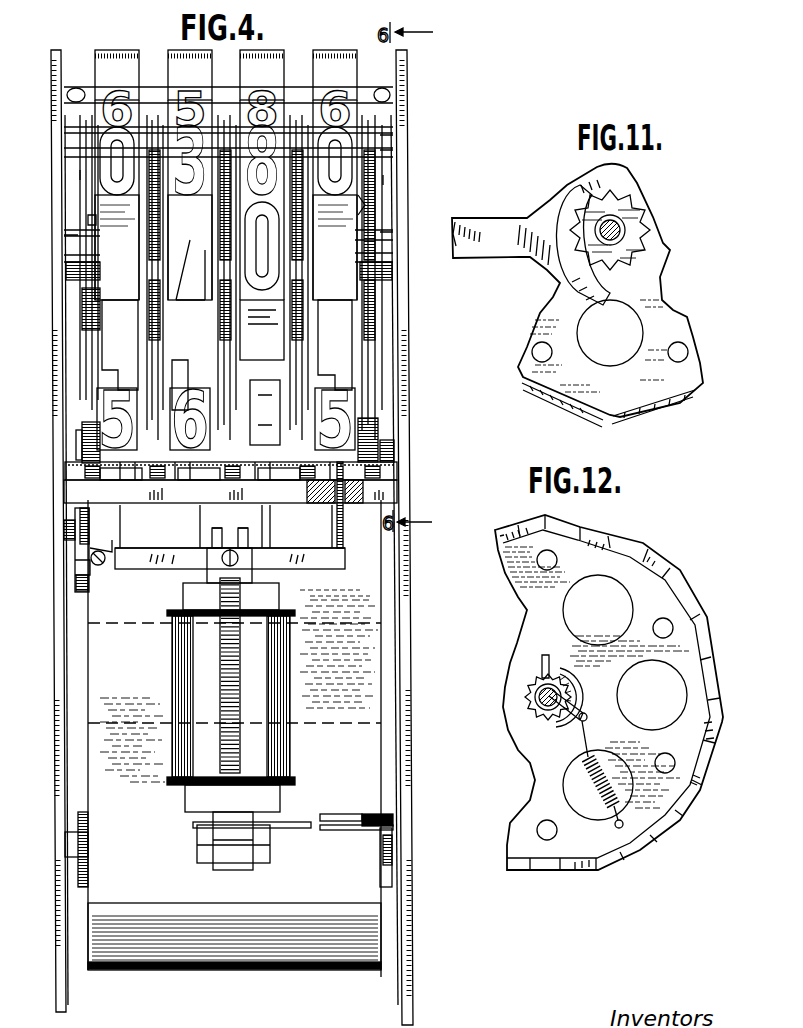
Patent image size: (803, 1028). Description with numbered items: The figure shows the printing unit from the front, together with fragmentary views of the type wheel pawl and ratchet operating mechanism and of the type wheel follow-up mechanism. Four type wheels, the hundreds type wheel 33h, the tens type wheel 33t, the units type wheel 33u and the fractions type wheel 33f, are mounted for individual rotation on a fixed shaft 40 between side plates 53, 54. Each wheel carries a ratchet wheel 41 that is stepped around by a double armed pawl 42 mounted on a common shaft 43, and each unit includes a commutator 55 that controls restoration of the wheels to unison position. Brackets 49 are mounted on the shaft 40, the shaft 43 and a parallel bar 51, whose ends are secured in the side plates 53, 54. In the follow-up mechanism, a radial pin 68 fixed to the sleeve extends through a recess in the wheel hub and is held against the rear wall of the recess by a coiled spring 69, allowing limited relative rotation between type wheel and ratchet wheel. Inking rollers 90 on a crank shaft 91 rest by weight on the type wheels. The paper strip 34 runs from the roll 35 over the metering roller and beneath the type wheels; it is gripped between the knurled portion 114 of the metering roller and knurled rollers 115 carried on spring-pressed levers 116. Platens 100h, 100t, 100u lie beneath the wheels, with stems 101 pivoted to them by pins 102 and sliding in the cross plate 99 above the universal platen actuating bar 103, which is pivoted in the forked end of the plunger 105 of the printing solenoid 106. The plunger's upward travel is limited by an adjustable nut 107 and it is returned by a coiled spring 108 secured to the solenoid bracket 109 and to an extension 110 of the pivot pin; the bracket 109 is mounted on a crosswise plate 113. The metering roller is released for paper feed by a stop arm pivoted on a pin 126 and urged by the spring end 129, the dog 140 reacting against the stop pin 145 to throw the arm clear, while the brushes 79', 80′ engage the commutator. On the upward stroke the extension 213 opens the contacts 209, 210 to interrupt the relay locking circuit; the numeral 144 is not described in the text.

In FIG. 4, the inking roller 90 is at (182, 62).
In FIG. 4, the crank shaft 91 is at (297, 93).
In FIG. 4, the bar 51 is at (382, 142).
In FIG. 4, the bracket 49 is at (83, 173).
In FIG. 4, the commutator 55 is at (360, 200).
In FIG. 4, the double armed pawl 42 is at (92, 220).
In FIG. 11, the double armed pawl 42 is at (487, 230).
In FIG. 4, the shaft 43 is at (72, 238).
In FIG. 4, the fixed shaft 40 is at (70, 272).
In FIG. 11, the fixed shaft 40 is at (622, 238).
In FIG. 12, the fixed shaft 40 is at (546, 697).
In FIG. 4, the ratchet wheel 41 is at (90, 307).
In FIG. 11, the ratchet wheel 41 is at (630, 202).
In FIG. 12, the ratchet wheel 41 is at (527, 712).
In FIG. 4, the hundreds type wheel 33h is at (108, 347).
In FIG. 11, the hundreds type wheel 33h is at (660, 373).
In FIG. 12, the hundreds type wheel 33h is at (657, 593).
In FIG. 4, the side plate 54 is at (410, 368).
In FIG. 4, the knurled roller 115 is at (88, 423).
In FIG. 4, the brush 80′ is at (380, 413).
In FIG. 4, the brush 79' is at (427, 410).
In FIG. 4, the lever 116 is at (80, 443).
In FIG. 4, the knurled portion 114 is at (88, 470).
In FIG. 4, the tens type wheel 33t is at (190, 420).
In FIG. 4, the paper strip 34 is at (227, 470).
In FIG. 4, the units type wheel 33u is at (267, 422).
In FIG. 4, the fractions type wheel 33f is at (333, 403).
In FIG. 4, the pin 102 is at (333, 463).
In FIG. 4, the hundreds platen 100h is at (112, 482).
In FIG. 4, the tens platen 100t is at (190, 482).
In FIG. 4, the units platen 100u is at (270, 484).
In FIG. 4, the side plate 53 is at (60, 505).
In FIG. 4, the cross plate 99 is at (230, 528).
In FIG. 4, the stem 101 is at (333, 517).
In FIG. 4, the pin 126 is at (65, 530).
In FIG. 4, the dog 140 is at (90, 545).
In FIG. 4, the spring end 129 is at (77, 567).
In FIG. 4, the pin 144 is at (83, 580).
In FIG. 4, the stop pin 145 is at (99, 566).
In FIG. 4, the plunger 105 is at (207, 575).
In FIG. 4, the extension 110 is at (238, 563).
In FIG. 4, the universal platen actuating bar 103 is at (328, 558).
In FIG. 4, the solenoid bracket 109 is at (273, 602).
In FIG. 4, the printing solenoid 106 is at (185, 662).
In FIG. 4, the coiled spring 108 is at (222, 690).
In FIG. 4, the plate 113 is at (312, 727).
In FIG. 4, the adjustable nut 107 is at (203, 835).
In FIG. 4, the extension 213 is at (285, 822).
In FIG. 4, the contact 210 is at (337, 810).
In FIG. 4, the contact 209 is at (340, 825).
In FIG. 4, the roll 35 is at (388, 863).
In FIG. 12, the radial pin 68 is at (566, 714).
In FIG. 12, the coiled spring 69 is at (587, 764).